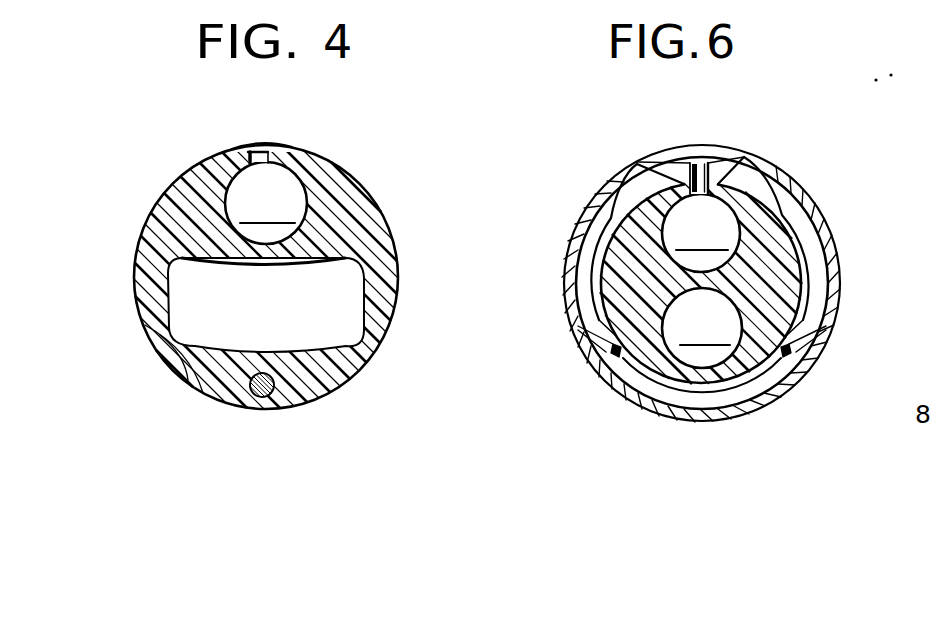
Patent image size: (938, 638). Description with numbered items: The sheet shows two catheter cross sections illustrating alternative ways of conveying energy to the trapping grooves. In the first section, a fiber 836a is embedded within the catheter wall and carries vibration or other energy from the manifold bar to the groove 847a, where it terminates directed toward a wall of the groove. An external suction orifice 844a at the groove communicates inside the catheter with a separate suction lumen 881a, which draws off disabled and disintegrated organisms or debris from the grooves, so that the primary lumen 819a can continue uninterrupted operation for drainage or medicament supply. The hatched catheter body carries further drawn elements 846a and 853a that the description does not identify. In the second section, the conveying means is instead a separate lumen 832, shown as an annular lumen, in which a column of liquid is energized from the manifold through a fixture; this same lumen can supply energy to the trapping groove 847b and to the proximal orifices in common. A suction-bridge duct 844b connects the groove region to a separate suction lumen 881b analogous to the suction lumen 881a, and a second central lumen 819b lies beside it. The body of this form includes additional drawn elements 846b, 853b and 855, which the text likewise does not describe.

In FIG. 4, the primary lumen 819a is at (266, 305).
In FIG. 6, the lumen 819b is at (702, 328).
In FIG. 6, the annular lumen 832 is at (580, 267).
In FIG. 4, the fiber 836a is at (257, 393).
In FIG. 4, the external suction orifice 844a is at (270, 148).
In FIG. 6, the suction-bridge duct 844b is at (710, 162).
In FIG. 4, the tubular body 846a is at (357, 176).
In FIG. 6, the tubular shell 846b is at (790, 180).
In FIG. 4, the groove 847a is at (240, 149).
In FIG. 6, the trapping groove 847b is at (731, 150).
In FIG. 4, the body wall 853a is at (357, 227).
In FIG. 6, the core body 853b is at (773, 258).
In FIG. 6, the spacer strips 855 is at (637, 163).
In FIG. 4, the suction lumen 881a is at (266, 203).
In FIG. 6, the separate suction lumen 881b is at (701, 233).